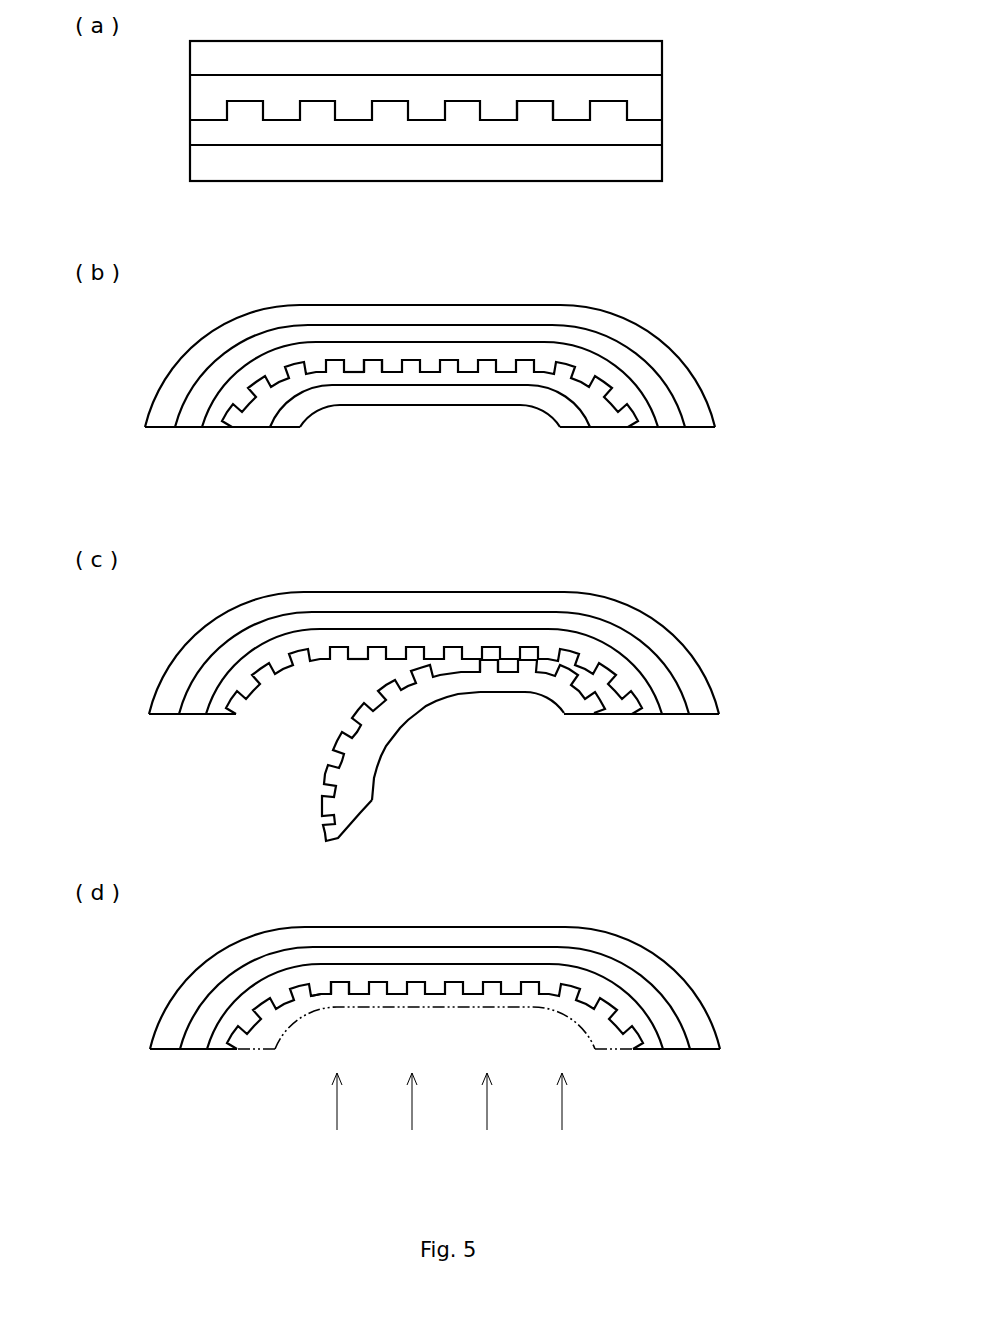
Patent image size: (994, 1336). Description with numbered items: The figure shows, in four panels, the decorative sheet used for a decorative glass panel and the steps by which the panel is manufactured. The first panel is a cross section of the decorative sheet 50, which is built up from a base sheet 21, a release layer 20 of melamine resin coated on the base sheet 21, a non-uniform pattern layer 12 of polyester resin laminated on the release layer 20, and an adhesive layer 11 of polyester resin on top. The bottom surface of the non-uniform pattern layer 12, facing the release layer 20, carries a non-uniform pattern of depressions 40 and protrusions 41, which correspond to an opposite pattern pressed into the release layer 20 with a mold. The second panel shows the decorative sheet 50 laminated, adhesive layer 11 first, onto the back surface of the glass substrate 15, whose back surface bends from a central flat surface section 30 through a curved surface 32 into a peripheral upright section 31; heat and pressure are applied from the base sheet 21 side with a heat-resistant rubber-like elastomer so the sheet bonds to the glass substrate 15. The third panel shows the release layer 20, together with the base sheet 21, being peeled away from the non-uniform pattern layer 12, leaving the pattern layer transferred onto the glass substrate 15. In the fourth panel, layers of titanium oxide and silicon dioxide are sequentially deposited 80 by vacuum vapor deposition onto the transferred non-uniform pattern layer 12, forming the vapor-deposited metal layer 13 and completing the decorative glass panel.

The adhesive layer 11 is at (664, 47).
The non-uniform pattern layer 12 is at (664, 99).
The vapor-deposited metal layer 13 is at (450, 1012).
The glass substrate 15 is at (633, 308).
The release layer 20 is at (664, 134).
The base sheet 21 is at (664, 168).
The flat surface section 30 is at (425, 312).
The upright section 31 is at (158, 431).
The curved surface 32 is at (233, 356).
The depressions 40 is at (540, 112).
The protrusions 41 is at (528, 113).
The decorative sheet 50 is at (350, 186).
The deposition 80 is at (336, 1112).